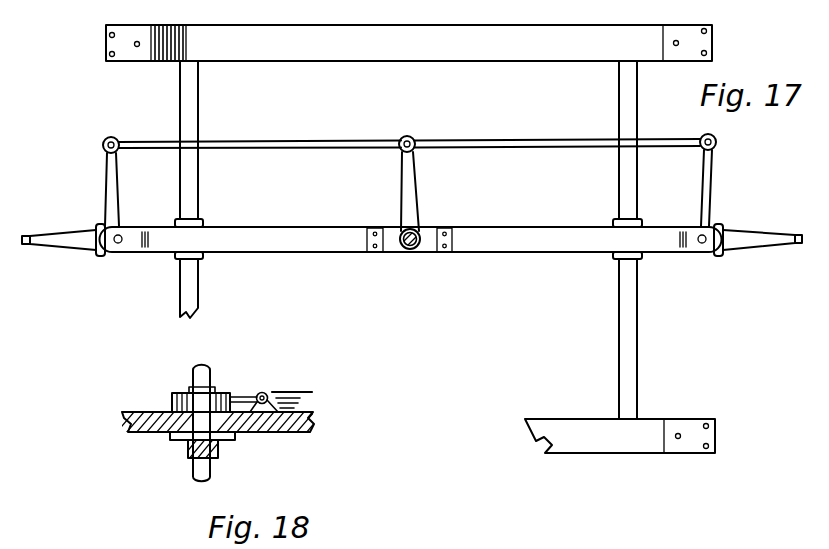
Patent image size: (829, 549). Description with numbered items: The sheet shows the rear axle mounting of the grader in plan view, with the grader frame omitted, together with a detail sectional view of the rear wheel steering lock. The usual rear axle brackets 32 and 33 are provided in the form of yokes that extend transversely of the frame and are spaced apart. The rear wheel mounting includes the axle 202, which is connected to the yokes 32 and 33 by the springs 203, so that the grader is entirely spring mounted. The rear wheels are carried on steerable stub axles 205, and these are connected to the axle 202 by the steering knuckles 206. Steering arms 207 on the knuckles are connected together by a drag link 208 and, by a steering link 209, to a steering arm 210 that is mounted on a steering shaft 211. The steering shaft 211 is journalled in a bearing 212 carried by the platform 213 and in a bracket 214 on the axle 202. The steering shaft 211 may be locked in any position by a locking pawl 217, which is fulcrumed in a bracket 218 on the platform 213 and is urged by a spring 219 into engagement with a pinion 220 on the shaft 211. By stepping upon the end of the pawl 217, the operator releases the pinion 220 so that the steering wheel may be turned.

In FIG. 17, the rear axle bracket 33 is at (393, 61).
In FIG. 17, the rear axle bracket 32 is at (198, 291).
In FIG. 17, the spring 203 is at (637, 378).
In FIG. 17, the axle 202 is at (513, 252).
In FIG. 17, the stub axle 205 is at (75, 243).
In FIG. 17, the steering knuckle 206 is at (120, 236).
In FIG. 17, the steering arm 207 is at (107, 180).
In FIG. 17, the drag link 208 is at (478, 149).
In FIG. 17, the steering link 209 is at (305, 149).
In FIG. 17, the steering arm 210 is at (416, 206).
In FIG. 17, the steering shaft 211 is at (403, 250).
In FIG. 18, the steering shaft 211 is at (198, 466).
In FIG. 17, the bracket 214 is at (428, 252).
In FIG. 18, the bearing 212 is at (218, 450).
In FIG. 18, the platform 213 is at (314, 421).
In FIG. 18, the locking pawl 217 is at (248, 397).
In FIG. 18, the bracket 218 is at (294, 392).
In FIG. 18, the spring 219 is at (300, 401).
In FIG. 18, the pinion 220 is at (222, 392).